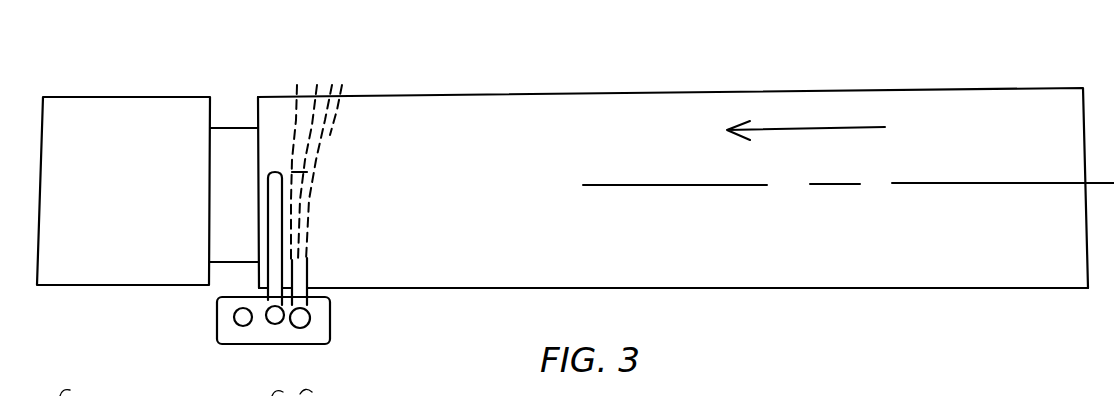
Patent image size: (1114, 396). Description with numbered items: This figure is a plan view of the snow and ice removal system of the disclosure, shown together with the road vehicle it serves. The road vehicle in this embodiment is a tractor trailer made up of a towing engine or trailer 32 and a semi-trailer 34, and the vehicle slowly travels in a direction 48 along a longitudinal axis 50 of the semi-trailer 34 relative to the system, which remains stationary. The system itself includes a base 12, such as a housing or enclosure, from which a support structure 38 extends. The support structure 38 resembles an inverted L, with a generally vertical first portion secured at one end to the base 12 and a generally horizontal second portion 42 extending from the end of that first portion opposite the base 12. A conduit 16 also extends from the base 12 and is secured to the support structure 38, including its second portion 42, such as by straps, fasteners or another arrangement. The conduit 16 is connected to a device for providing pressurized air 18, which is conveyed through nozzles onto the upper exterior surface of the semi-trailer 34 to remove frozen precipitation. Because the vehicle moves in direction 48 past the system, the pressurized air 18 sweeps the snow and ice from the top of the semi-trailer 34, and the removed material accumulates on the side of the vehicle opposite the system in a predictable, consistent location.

The base 12 is at (212, 378).
The conduit 16 is at (266, 172).
The pressurized air 18 is at (326, 132).
The towing engine or trailer 32 is at (92, 290).
The semi-trailer 34 is at (480, 93).
The support structure 38 is at (303, 325).
The second portion 42 is at (308, 272).
The direction 48 is at (787, 127).
The longitudinal axis 50 is at (707, 188).